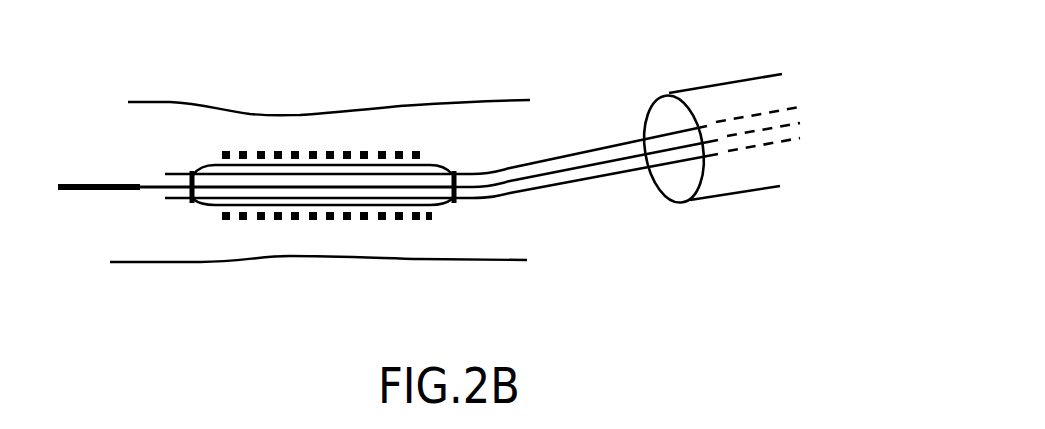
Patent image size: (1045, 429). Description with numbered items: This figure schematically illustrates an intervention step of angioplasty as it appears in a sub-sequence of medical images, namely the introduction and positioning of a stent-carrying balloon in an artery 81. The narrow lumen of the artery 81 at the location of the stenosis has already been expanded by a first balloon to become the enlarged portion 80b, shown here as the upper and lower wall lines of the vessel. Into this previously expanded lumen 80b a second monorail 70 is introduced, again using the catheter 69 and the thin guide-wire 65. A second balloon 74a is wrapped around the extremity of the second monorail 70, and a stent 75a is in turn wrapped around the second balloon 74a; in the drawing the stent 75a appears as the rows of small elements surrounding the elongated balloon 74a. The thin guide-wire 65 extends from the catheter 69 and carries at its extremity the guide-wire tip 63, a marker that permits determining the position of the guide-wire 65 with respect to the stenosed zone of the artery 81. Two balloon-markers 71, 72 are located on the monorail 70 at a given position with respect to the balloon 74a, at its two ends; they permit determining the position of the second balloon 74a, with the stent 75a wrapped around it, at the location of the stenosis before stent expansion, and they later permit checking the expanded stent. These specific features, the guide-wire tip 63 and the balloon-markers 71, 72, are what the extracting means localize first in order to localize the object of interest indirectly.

The guide-wire tip 63 is at (86, 193).
The thin guide-wire 65 is at (646, 196).
The catheter 69 is at (768, 189).
The second monorail 70 is at (620, 177).
The balloon-marker 71 is at (192, 203).
The balloon-marker 72 is at (455, 203).
The second balloon 74a is at (410, 219).
The stent 75a is at (378, 151).
The enlarged portion of the artery 80b is at (293, 116).
The artery 81 is at (155, 270).